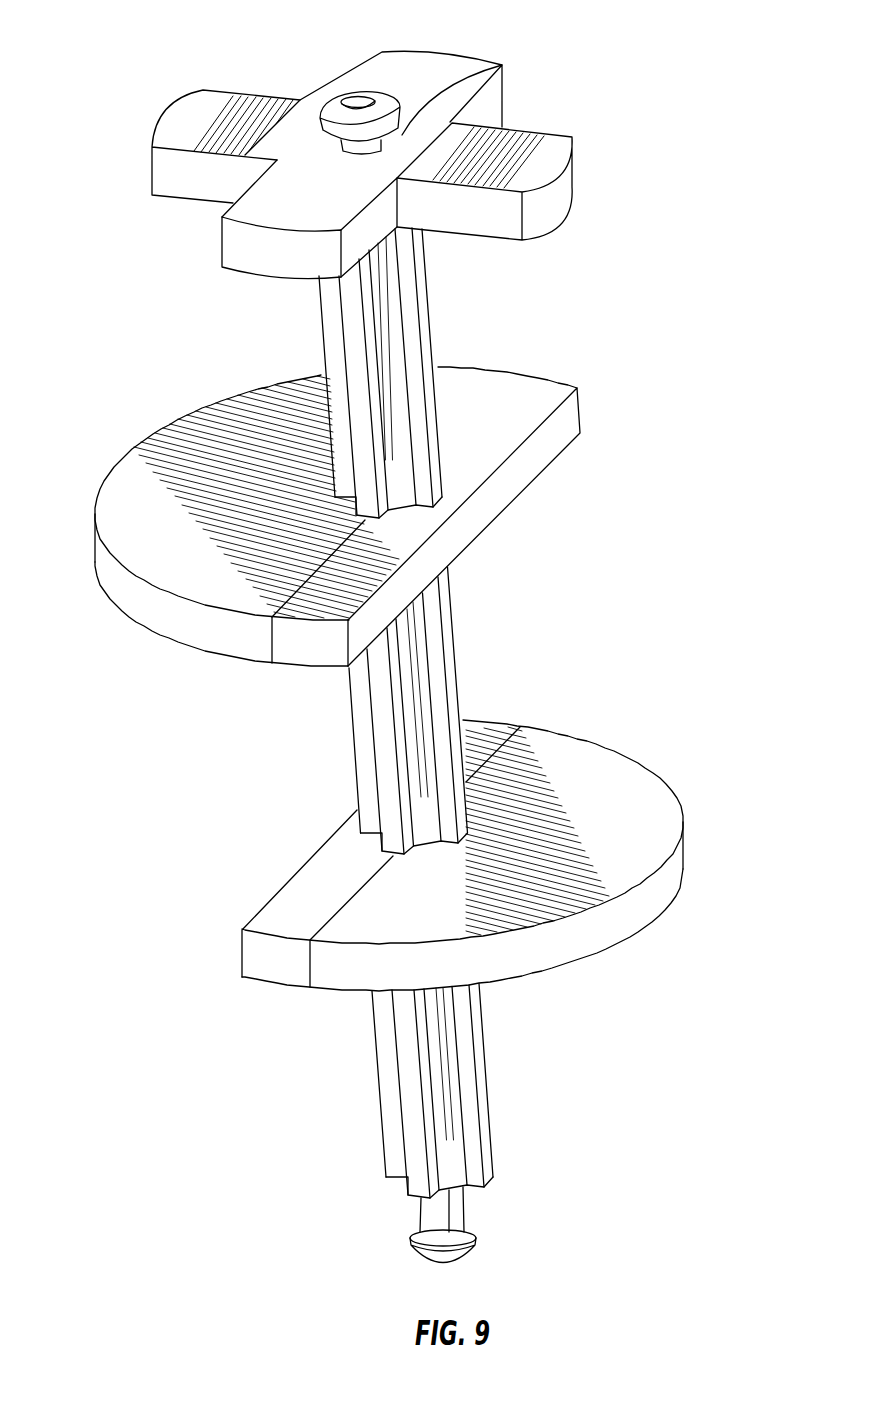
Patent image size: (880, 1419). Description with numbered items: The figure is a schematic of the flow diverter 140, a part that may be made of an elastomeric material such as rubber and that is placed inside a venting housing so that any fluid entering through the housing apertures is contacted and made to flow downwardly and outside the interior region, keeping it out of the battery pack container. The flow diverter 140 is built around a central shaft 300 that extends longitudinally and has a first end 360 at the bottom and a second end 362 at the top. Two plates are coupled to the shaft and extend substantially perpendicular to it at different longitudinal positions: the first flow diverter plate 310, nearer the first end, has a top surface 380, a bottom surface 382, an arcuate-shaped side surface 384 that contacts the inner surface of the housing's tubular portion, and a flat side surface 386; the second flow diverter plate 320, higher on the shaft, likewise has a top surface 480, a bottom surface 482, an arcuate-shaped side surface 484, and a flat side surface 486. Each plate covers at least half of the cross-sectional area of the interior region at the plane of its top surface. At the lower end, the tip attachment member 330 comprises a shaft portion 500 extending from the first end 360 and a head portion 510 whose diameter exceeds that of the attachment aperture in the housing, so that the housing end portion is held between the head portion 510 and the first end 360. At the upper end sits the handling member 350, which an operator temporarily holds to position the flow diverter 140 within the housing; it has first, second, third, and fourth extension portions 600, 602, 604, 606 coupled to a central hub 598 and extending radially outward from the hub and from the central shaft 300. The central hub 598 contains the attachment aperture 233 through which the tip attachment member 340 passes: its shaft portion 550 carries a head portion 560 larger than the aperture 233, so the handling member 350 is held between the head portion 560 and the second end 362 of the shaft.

The flow diverter 140 is at (654, 157).
The attachment aperture 233 is at (377, 153).
The central shaft 300 is at (411, 317).
The first flow diverter plate 310 is at (665, 779).
The second flow diverter plate 320 is at (579, 399).
The tip attachment member 330 is at (466, 1214).
The tip attachment member 340 is at (486, 57).
The handling member 350 is at (219, 248).
The first end 360 is at (487, 1187).
The second end 362 is at (423, 231).
The top surface 380 is at (588, 753).
The bottom surface 382 is at (617, 938).
The arcuate-shaped side surface 384 is at (679, 842).
The flat side surface 386 is at (232, 937).
The top surface 480 is at (152, 468).
The bottom surface 482 is at (215, 656).
The arcuate-shaped side surface 484 is at (112, 578).
The flat side surface 486 is at (548, 470).
The shaft portion 500 is at (428, 1217).
The head portion 510 is at (463, 1252).
The shaft portion 550 is at (343, 148).
The head portion 560 is at (353, 100).
The central hub 598 is at (465, 98).
The first extension portion 600 is at (562, 185).
The second extension portion 602 is at (268, 262).
The third extension portion 604 is at (175, 120).
The fourth extension portion 606 is at (464, 54).